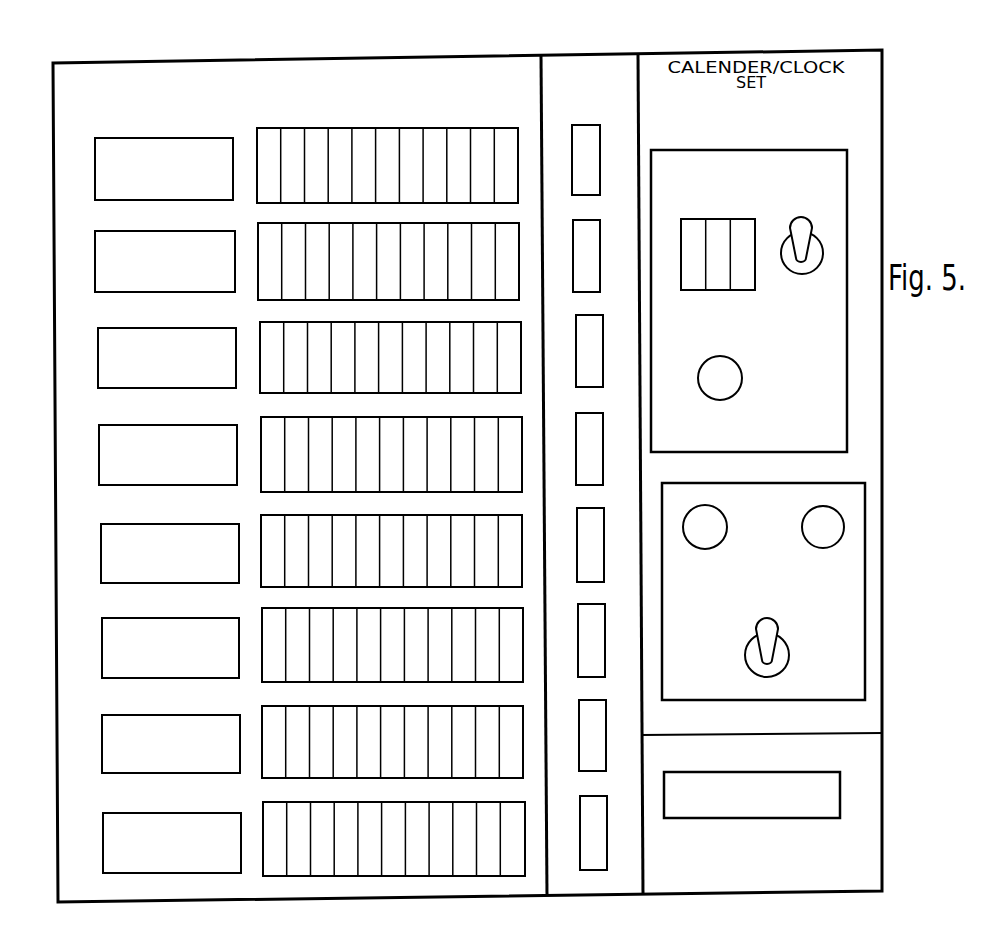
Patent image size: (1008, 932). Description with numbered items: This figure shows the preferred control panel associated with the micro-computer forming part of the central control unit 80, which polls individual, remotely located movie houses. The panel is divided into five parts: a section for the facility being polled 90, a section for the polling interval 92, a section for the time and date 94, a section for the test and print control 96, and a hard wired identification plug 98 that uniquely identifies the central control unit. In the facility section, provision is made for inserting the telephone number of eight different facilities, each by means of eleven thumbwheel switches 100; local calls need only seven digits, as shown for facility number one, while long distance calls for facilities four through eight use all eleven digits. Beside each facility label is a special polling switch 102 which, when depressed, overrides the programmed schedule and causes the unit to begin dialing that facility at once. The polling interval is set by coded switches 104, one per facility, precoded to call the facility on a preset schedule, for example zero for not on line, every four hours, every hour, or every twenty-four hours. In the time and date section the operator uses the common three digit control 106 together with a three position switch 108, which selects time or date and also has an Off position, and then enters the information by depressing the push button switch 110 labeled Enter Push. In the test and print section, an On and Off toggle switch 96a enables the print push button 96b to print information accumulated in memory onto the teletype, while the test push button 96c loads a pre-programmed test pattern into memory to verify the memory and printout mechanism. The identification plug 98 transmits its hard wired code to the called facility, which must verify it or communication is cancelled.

The central control unit 80 is at (825, 49).
The facility being polled control section 90 is at (64, 88).
The polling interval control section 92 is at (591, 63).
The time and date control section 94 is at (715, 153).
The test and print control section 96 is at (855, 484).
The On and Off toggle switch 96a is at (747, 657).
The print push button 96b is at (697, 548).
The test push button 96c is at (816, 547).
The identification plug 98 is at (826, 770).
The digit display row 100 is at (399, 489).
The special polling switch 102 is at (99, 137).
The coded switch 104 is at (594, 166).
The three digit control 106 is at (748, 223).
The three position switch 108 is at (814, 232).
The push button switch 110 is at (742, 383).